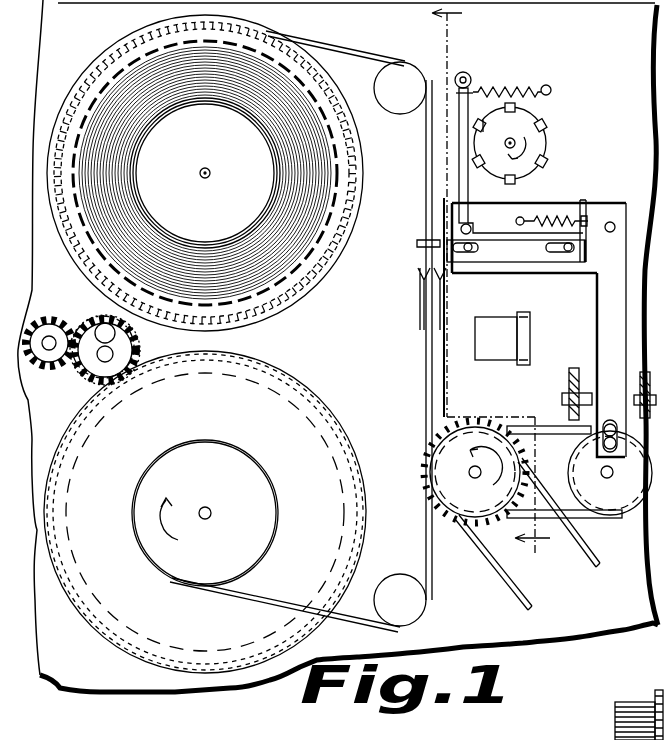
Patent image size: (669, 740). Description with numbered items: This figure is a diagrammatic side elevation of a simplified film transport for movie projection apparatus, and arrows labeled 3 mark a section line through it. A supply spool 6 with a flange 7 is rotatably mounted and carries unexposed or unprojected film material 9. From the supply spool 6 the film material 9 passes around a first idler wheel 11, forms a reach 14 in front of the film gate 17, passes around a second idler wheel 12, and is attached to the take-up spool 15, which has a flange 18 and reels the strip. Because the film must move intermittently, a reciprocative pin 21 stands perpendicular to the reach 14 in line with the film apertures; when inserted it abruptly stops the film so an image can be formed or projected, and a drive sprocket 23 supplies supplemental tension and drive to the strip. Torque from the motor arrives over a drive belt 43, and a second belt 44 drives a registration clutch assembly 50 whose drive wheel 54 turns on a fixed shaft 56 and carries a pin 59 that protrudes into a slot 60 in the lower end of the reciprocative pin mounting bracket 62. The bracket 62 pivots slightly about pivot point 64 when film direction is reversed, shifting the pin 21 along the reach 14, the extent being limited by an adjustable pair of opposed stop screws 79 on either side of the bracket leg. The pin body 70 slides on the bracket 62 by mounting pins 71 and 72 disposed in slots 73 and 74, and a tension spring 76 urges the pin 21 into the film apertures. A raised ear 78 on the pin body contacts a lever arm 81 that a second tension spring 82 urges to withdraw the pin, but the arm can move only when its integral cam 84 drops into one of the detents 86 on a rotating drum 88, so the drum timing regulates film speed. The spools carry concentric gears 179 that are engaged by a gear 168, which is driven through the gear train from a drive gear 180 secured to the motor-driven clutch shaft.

The section line 3- 3 is at (491, 288).
The supply spool 6 is at (98, 318).
The flange 7 is at (88, 268).
The film material 9 is at (372, 52).
The idler wheel 11 is at (412, 72).
The idler wheel 12 is at (420, 627).
The reach 14 is at (426, 224).
The take-up spool 15 is at (175, 577).
The film gate 17 is at (418, 308).
The flange 18 is at (128, 652).
The reciprocative pin 21 is at (417, 244).
The drive sprocket 23 is at (464, 522).
The drive belt 43 is at (496, 570).
The second belt 44 is at (586, 518).
The registration clutch assembly 50 is at (637, 521).
The drive wheel 54 is at (576, 467).
The fixed shaft 56 is at (609, 478).
The pin 59 is at (626, 438).
The slot 60 is at (610, 420).
The reciprocative pin mounting bracket 62 is at (628, 240).
The pivot point 64 is at (610, 222).
The pin body 70 is at (490, 263).
The mounting pin 71 is at (480, 247).
The mounting pin 72 is at (570, 263).
The slot 73 is at (458, 263).
The slot 74 is at (548, 263).
The tension spring 76 is at (553, 216).
The raised ear 78 is at (490, 222).
The stop screws 79 is at (574, 368).
The lever arm 81 is at (476, 202).
The second tension spring 82 is at (500, 88).
The cam 84 is at (467, 147).
The detents 86 is at (485, 127).
The rotating drum 88 is at (524, 132).
The gear 168 is at (140, 352).
The concentric gears 179 is at (62, 437).
The drive gear 180 is at (48, 368).